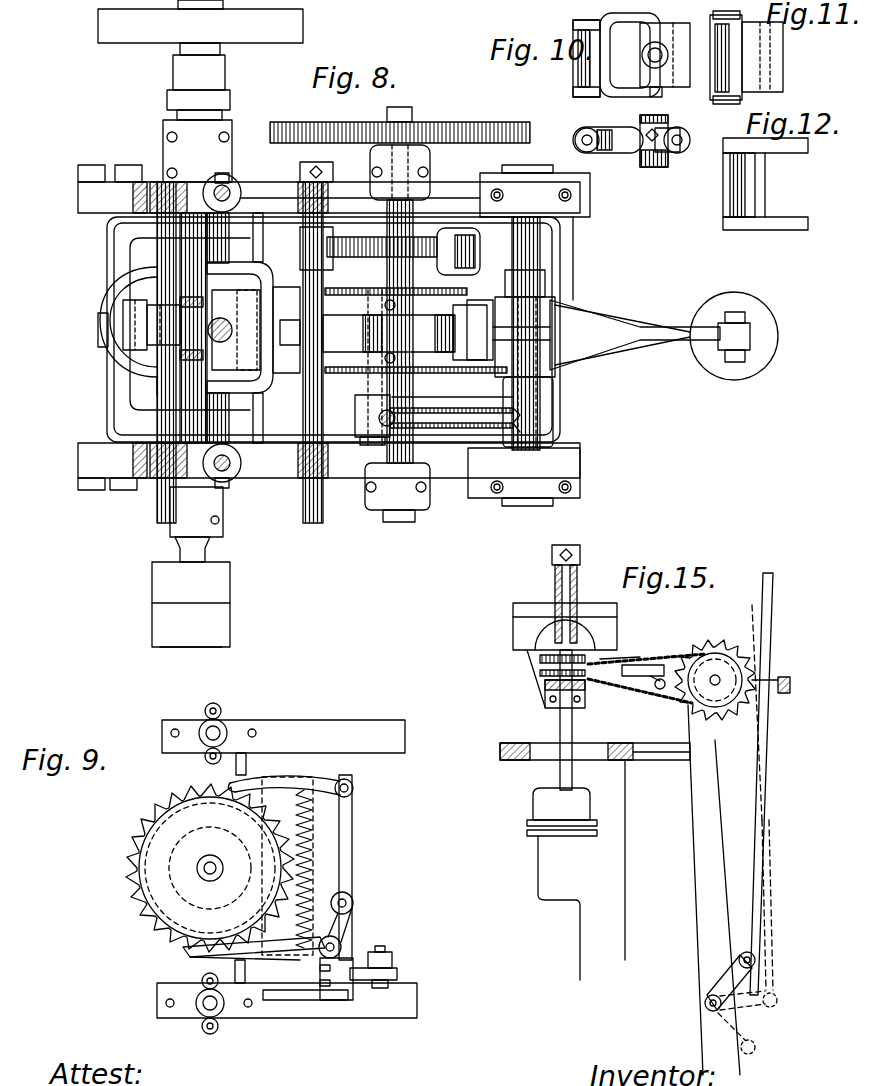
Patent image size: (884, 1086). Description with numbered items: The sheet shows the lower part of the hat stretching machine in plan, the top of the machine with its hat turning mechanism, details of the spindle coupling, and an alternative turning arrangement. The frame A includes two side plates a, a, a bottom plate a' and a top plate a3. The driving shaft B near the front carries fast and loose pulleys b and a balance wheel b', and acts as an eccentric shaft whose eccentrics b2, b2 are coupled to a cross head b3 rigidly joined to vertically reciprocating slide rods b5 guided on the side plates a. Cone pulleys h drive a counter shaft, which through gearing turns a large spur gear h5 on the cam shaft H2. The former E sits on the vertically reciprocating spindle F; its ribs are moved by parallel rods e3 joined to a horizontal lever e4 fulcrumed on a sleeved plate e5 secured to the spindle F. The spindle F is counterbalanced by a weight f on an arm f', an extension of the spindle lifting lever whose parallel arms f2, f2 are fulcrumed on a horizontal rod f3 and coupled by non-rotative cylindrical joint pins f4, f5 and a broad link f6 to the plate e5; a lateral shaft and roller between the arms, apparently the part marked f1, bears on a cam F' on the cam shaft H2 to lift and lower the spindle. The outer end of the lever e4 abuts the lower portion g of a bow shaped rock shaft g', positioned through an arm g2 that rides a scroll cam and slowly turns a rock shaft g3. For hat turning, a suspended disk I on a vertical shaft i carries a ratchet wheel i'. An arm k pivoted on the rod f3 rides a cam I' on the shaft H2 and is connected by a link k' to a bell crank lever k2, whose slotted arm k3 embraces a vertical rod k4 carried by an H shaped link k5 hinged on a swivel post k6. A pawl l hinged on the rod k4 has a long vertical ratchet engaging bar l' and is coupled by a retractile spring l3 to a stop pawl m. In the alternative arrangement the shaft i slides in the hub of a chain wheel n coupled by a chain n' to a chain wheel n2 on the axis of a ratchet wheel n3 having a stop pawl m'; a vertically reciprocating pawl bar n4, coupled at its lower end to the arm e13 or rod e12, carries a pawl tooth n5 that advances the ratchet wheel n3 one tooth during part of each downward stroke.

In FIG. 8, the balance wheel b' is at (200, 27).
In FIG. 8, the cone pulleys h is at (207, 87).
In FIG. 8, the side plates a is at (334, 335).
In FIG. 9, the side plates a is at (272, 868).
In FIG. 8, the frame A is at (319, 329).
In FIG. 8, the bottom plate a' is at (166, 324).
In FIG. 8, the eccentrics b2 is at (200, 243).
In FIG. 8, the slide rods b5 is at (232, 185).
In FIG. 8, the fast and loose pulleys b is at (181, 567).
In FIG. 8, the driving shaft B is at (190, 648).
In FIG. 8, the lower portion of rock shaft g is at (112, 322).
In FIG. 8, the bow shaped rock shaft g' is at (148, 392).
In FIG. 8, the horizontal lever e4 is at (135, 325).
In FIG. 8, the parallel links or rods e3 is at (180, 300).
In FIG. 8, the cross head b3 is at (241, 271).
In FIG. 8, the spindle F is at (236, 321).
In FIG. 8, the cross head or sleeved plate e5 is at (228, 321).
In FIG. 10, the cross head or sleeved plate e5 is at (648, 40).
In FIG. 8, the arms of spindle lifting lever f2 is at (290, 287).
In FIG. 12, the arms of spindle lifting lever f2 is at (790, 153).
In FIG. 8, the rock shaft g3 is at (315, 355).
In FIG. 8, the large spur gear h5 is at (432, 124).
In FIG. 8, the cam shaft H2 is at (397, 347).
In FIG. 8, the former E is at (376, 240).
In FIG. 8, the arm g2 is at (450, 259).
In FIG. 8, the horizontal bar or rod f3 is at (545, 260).
In FIG. 8, the cam F' is at (415, 330).
In FIG. 8, the pivot f1 is at (366, 330).
In FIG. 8, the arm f' is at (606, 335).
In FIG. 8, the weight f is at (734, 336).
In FIG. 8, the link k' is at (363, 416).
In FIG. 9, the link k' is at (386, 951).
In FIG. 8, the cam I' is at (451, 401).
In FIG. 8, the arm k is at (455, 410).
In FIG. 11, the cylindrical joint pin f5 is at (722, 56).
In FIG. 11, the broad link f6 is at (772, 70).
In FIG. 12, the cylindrical joint pin f4 is at (730, 180).
In FIG. 9, the ratchet wheel i' is at (210, 868).
In FIG. 9, the vertical shaft i is at (210, 868).
In FIG. 15, the vertical shaft i is at (554, 720).
In FIG. 9, the retractile spiral spring l3 is at (308, 890).
In FIG. 9, the top plate a3 is at (350, 836).
In FIG. 9, the stop pawl m is at (271, 780).
In FIG. 9, the ratchet engaging bar l' is at (230, 943).
In FIG. 9, the pawl l is at (225, 966).
In FIG. 9, the vertical swivel post k6 is at (352, 901).
In FIG. 9, the H shaped link k5 is at (350, 919).
In FIG. 9, the vertical rod k4 is at (342, 946).
In FIG. 9, the slotted arm k3 is at (318, 966).
In FIG. 9, the bell crank lever k2 is at (397, 973).
In FIG. 15, the chain wheel n is at (542, 680).
In FIG. 15, the suspended disk I is at (562, 812).
In FIG. 15, the ratchet wheel n3 is at (722, 646).
In FIG. 15, the chain wheel n2 is at (716, 712).
In FIG. 15, the stop pawl m' is at (651, 659).
In FIG. 15, the chain n' is at (621, 646).
In FIG. 15, the pawl bar n4 is at (760, 819).
In FIG. 15, the pawl tooth n5 is at (773, 672).
In FIG. 15, the rod e12 is at (756, 960).
In FIG. 15, the arm e13 is at (725, 992).